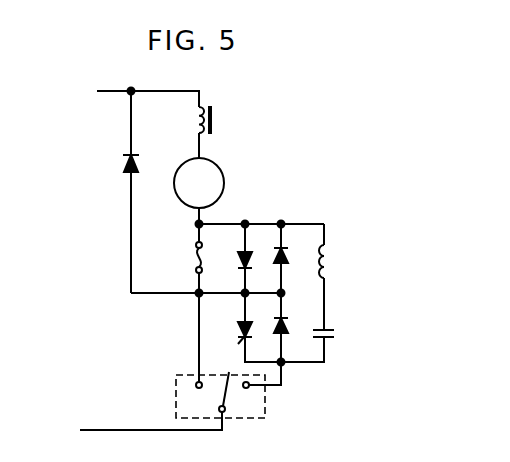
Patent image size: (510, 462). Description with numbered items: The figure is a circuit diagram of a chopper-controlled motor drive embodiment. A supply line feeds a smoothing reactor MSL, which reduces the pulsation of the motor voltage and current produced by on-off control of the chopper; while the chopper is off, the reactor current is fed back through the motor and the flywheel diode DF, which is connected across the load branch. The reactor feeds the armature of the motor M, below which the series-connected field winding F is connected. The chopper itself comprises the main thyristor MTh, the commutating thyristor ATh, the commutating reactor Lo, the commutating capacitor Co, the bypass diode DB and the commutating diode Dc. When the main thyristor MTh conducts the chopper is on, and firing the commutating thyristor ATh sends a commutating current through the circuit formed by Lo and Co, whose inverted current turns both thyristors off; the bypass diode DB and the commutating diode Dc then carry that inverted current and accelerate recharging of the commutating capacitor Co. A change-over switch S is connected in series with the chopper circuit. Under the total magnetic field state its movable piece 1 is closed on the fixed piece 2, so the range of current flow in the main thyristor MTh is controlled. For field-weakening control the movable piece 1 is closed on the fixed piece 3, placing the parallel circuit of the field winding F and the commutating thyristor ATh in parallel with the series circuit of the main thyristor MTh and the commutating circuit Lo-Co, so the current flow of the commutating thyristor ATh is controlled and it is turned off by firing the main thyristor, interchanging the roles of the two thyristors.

The smoothing reactor MSL is at (215, 122).
The flywheel diode DF is at (122, 166).
The armature of the motor M is at (199, 178).
The series-connected field winding F is at (194, 247).
The commutating thyristor ATh is at (251, 248).
The commutating diode Dc is at (293, 251).
The commutating reactor Lo is at (337, 258).
The commutating capacitor Co is at (334, 333).
The main thyristor MTh is at (236, 329).
The bypass diode DB is at (287, 338).
The change-over switch S is at (181, 370).
The movable piece 1 is at (154, 389).
The fixed piece 2 is at (260, 388).
The fixed piece 3 is at (198, 354).